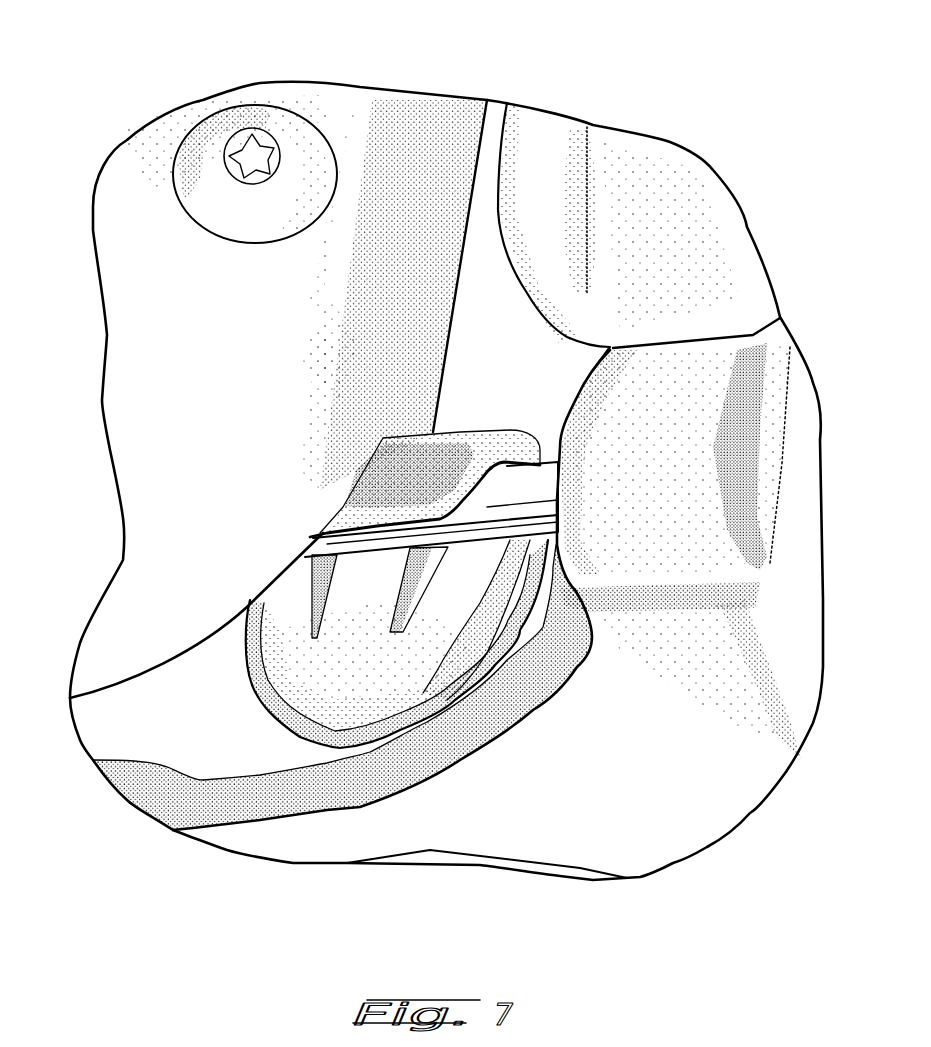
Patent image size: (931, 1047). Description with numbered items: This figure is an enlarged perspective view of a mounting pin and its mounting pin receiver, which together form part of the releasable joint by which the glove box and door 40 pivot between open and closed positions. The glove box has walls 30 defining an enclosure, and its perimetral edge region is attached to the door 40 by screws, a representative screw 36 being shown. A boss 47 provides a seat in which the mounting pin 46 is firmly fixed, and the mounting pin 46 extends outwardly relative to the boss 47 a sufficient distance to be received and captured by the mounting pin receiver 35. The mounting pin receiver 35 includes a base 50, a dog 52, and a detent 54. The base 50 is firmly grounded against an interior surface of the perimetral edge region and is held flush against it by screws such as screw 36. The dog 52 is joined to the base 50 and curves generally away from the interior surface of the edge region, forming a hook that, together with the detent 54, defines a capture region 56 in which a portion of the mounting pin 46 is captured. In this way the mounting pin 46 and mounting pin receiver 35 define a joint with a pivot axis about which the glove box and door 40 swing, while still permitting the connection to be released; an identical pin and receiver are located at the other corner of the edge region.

The walls 30 is at (157, 350).
The screw 36 is at (227, 117).
The boss 47 is at (700, 367).
The door 40 is at (163, 803).
The base 50 is at (272, 673).
The mounting pin receiver 35 is at (425, 640).
The detent 54 is at (313, 577).
The capture region 56 is at (458, 548).
The mounting pin 46 is at (533, 480).
The dog 52 is at (470, 453).